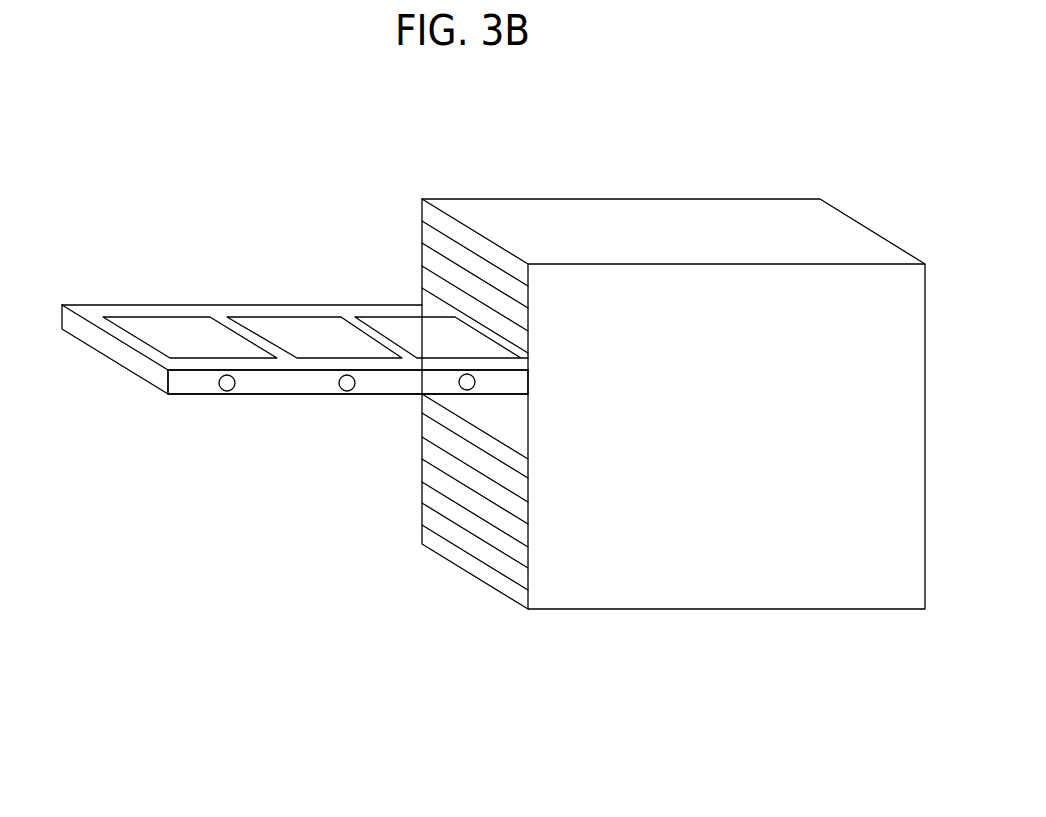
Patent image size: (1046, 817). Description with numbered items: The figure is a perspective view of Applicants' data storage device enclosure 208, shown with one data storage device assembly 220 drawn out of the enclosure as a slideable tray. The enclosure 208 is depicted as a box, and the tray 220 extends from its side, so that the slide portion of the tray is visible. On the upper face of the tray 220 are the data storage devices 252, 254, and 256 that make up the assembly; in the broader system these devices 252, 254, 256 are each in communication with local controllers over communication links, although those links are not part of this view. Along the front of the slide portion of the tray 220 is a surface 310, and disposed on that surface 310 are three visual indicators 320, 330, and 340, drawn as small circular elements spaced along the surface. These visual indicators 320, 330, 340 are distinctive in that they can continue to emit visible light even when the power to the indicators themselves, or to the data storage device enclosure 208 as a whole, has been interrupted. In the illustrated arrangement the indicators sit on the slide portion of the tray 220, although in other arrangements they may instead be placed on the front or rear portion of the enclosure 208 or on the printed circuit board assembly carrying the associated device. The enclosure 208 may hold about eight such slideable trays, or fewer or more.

The data storage device enclosure 208 is at (653, 617).
The data storage device assembly 220 is at (293, 447).
The surface 310 is at (287, 385).
The data storage device 252 is at (167, 348).
The data storage device 254 is at (300, 348).
The data storage device 256 is at (422, 348).
The visual indicator 320 is at (227, 397).
The visual indicator 330 is at (347, 397).
The visual indicator 340 is at (477, 382).